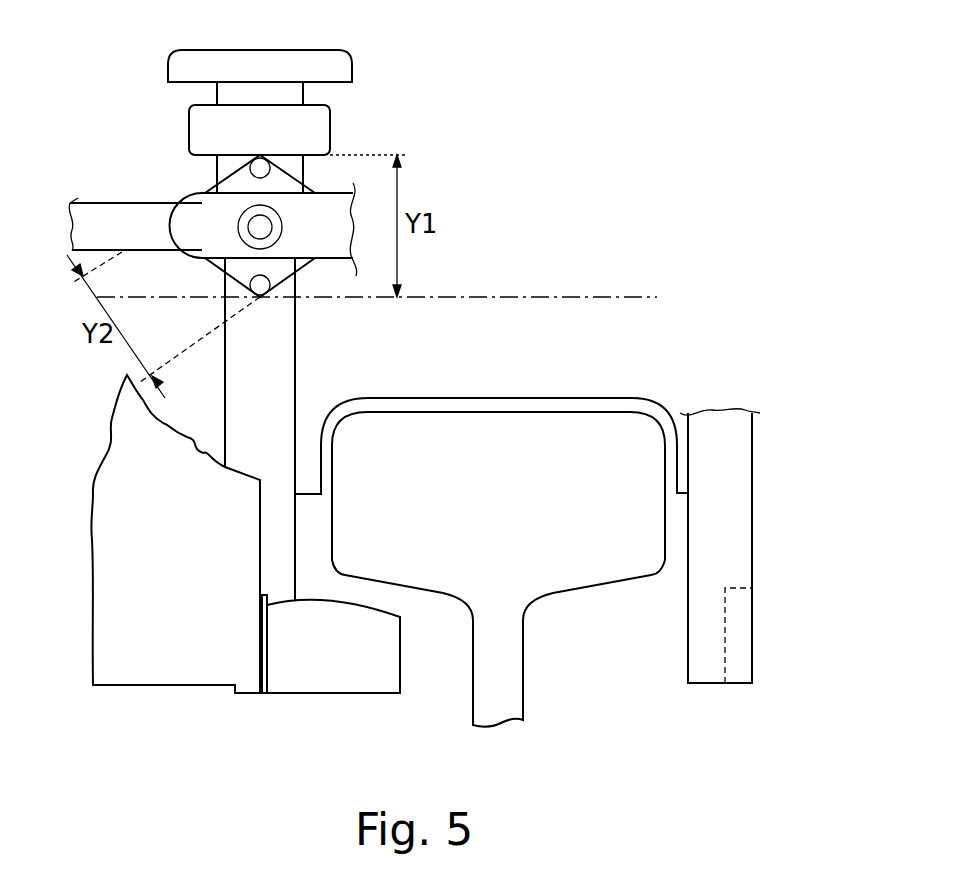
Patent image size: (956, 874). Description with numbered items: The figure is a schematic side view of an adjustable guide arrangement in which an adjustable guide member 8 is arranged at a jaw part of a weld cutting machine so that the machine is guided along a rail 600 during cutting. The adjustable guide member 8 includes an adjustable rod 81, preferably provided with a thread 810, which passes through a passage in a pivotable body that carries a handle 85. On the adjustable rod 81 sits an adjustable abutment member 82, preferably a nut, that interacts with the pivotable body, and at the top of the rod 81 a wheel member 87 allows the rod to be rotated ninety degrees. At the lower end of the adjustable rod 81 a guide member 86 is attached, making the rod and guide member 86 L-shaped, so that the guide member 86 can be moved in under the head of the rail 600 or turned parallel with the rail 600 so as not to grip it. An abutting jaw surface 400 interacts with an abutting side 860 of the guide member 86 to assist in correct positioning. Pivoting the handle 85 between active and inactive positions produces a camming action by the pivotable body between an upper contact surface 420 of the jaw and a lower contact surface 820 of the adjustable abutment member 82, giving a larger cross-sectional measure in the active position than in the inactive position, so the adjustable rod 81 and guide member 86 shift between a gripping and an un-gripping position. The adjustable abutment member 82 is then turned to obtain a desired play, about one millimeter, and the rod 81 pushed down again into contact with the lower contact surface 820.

The wheel member 87 is at (327, 70).
The thread 810 is at (217, 90).
The adjustable abutment member 82 is at (308, 135).
The lower contact surface 820 is at (307, 160).
The handle 85 is at (83, 220).
The upper contact surface 420 is at (488, 297).
The adjustable rod 81 is at (280, 368).
The adjustable guide member 8 is at (315, 398).
The guide member 86 is at (383, 652).
The rail 600 is at (542, 648).
The abutting jaw surface 400 is at (258, 653).
The abutting side 860 is at (258, 690).